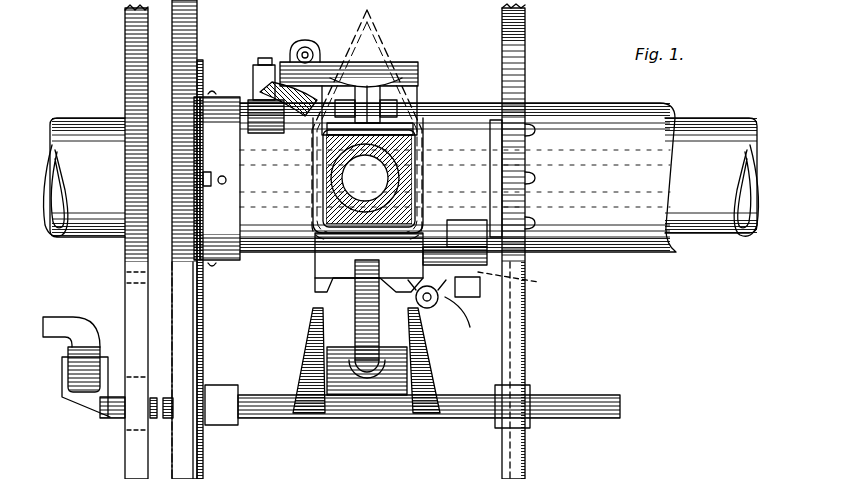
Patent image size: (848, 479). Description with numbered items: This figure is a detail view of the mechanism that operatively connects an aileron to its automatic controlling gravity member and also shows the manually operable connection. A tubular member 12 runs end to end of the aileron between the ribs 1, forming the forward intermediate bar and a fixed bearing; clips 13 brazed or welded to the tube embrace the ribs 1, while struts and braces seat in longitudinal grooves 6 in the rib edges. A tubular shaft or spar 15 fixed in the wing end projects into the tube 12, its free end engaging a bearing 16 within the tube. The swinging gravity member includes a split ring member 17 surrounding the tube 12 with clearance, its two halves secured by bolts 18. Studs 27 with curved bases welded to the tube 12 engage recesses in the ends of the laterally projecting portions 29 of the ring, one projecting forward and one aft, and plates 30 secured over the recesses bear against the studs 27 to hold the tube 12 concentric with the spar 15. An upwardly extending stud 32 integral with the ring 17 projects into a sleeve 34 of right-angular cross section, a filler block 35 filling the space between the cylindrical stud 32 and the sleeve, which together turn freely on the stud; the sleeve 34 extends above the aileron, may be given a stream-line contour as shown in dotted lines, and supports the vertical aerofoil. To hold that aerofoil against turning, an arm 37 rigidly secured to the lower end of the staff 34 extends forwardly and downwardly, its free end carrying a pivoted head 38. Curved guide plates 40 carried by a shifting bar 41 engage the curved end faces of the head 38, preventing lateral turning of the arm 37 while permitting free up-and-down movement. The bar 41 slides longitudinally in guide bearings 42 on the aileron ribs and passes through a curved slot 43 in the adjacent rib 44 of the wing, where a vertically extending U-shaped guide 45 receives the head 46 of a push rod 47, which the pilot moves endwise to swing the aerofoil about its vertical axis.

The ribs 1 is at (526, 50).
The longitudinal grooves 6 is at (520, 318).
The tubular member 12 is at (578, 102).
The clips 13 is at (538, 157).
The tubular shaft or spar 15 is at (94, 116).
The bearing 16 is at (308, 39).
The split ring member 17 is at (325, 258).
The bolts 18 is at (434, 304).
The studs 27 is at (244, 90).
The laterally projecting portions 29 is at (302, 105).
The plates 30 is at (255, 63).
The upwardly extending stud 32 is at (420, 162).
The sleeve 34 is at (410, 140).
The filler block 35 is at (415, 204).
The arm 37 is at (370, 325).
The head 38 is at (344, 382).
The guide plates 40 is at (310, 340).
The shifting bar 41 is at (274, 417).
The guide bearings 42 is at (225, 385).
The curved slot 43 is at (133, 432).
The rib 44 is at (128, 288).
The U-shaped guide 45 is at (64, 370).
The head 46 is at (90, 354).
The push rod 47 is at (60, 317).